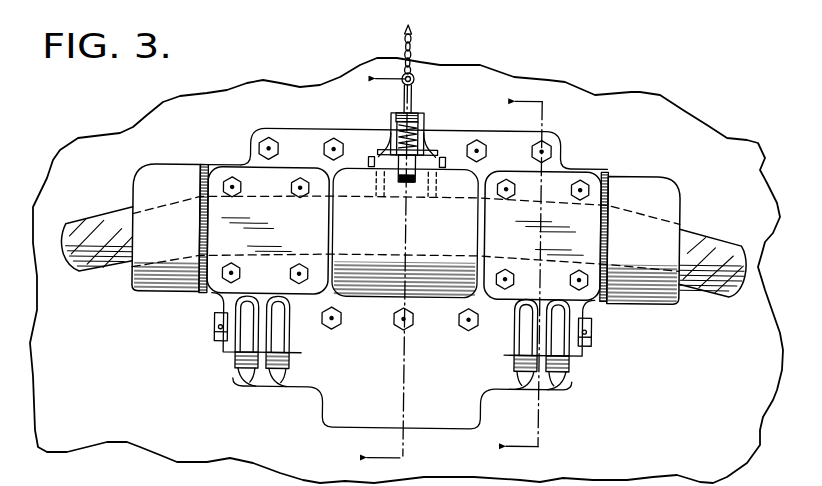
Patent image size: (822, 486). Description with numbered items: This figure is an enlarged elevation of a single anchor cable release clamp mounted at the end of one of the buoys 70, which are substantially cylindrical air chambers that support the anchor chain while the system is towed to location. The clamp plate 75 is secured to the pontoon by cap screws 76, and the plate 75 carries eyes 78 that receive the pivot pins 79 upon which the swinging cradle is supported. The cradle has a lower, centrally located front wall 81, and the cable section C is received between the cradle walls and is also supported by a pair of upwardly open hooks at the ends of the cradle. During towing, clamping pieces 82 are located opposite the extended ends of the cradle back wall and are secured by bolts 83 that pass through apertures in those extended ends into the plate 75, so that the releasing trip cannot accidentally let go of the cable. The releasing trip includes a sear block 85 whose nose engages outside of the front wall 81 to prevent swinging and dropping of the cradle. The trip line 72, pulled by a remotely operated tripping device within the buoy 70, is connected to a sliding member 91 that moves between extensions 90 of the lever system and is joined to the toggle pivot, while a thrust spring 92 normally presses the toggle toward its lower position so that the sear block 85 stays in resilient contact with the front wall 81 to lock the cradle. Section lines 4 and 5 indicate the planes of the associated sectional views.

The section line 4- 4 is at (376, 269).
The section line 5- 5 is at (515, 276).
The buoy 70 is at (703, 138).
The trip line 72 is at (412, 50).
The clamp plate 75 is at (345, 407).
The cap screws 76 is at (331, 142).
The eyes 78 is at (277, 355).
The pivot pins 79 is at (214, 333).
The front wall 81 is at (383, 250).
The clamping pieces 82 is at (247, 180).
The bolts 83 is at (294, 275).
The sear block 85 is at (411, 182).
The extensions 90 is at (391, 129).
The sliding member 91 is at (412, 100).
The thrust spring 92 is at (414, 136).
The cable section C is at (85, 230).